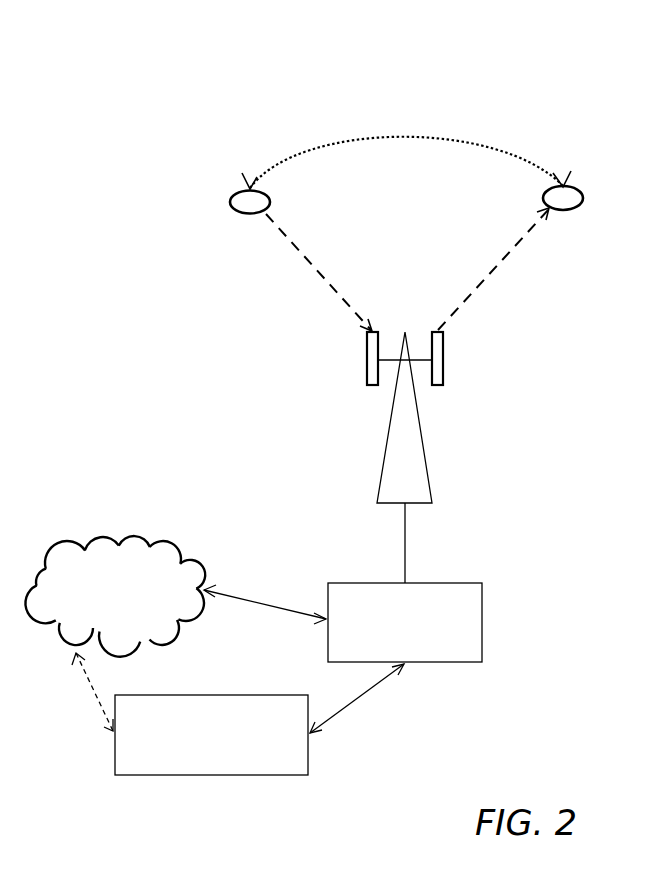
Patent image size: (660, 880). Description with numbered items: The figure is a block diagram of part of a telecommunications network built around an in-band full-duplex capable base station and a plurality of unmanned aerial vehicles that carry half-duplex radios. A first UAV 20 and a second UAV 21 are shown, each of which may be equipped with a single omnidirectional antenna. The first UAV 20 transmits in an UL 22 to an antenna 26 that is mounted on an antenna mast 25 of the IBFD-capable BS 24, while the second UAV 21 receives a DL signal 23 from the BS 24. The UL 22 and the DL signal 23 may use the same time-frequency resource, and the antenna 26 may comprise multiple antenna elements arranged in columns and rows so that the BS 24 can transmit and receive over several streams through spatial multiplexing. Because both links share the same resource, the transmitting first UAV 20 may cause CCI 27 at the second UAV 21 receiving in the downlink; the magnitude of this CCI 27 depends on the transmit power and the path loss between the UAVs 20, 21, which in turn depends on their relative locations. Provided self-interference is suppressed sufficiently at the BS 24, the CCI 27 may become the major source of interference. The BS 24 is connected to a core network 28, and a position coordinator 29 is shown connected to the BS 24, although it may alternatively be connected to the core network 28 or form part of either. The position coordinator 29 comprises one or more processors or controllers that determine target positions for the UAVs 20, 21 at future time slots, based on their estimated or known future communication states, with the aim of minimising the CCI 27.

The first UAV 20 is at (250, 190).
The second UAV 21 is at (585, 197).
The UL 22 is at (312, 268).
The DL signal 23 is at (500, 268).
The IBFD-capable BS 24 is at (482, 602).
The antenna mast 25 is at (432, 483).
The antenna 26 is at (445, 386).
The CCI 27 is at (435, 136).
The core network 28 is at (93, 543).
The position coordinator 29 is at (313, 752).